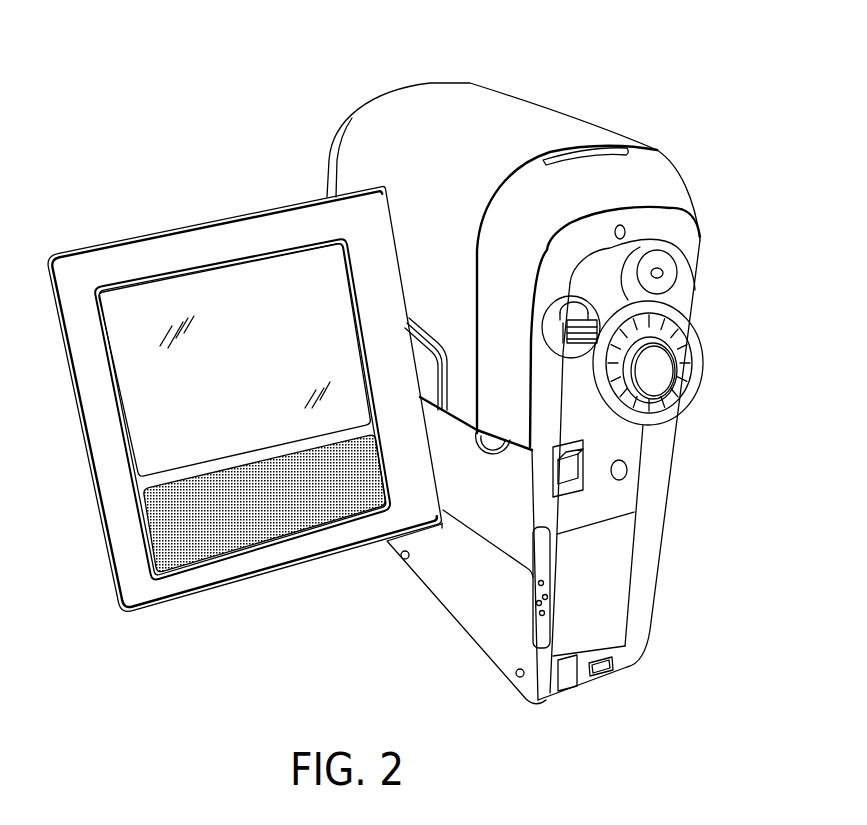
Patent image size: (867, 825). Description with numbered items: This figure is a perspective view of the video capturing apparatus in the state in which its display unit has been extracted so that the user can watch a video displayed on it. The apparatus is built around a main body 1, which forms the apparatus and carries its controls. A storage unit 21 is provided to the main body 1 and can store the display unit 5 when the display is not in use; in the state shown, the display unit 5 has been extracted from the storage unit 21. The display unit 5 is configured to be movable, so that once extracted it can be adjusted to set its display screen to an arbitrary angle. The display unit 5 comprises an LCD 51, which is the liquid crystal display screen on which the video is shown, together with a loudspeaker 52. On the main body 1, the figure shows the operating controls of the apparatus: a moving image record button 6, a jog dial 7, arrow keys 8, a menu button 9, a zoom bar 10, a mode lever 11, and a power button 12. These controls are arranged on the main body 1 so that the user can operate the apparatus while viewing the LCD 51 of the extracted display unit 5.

The main body 1 is at (474, 103).
The display unit 5 is at (222, 232).
The LCD 51 is at (142, 392).
The loudspeaker 52 is at (162, 556).
The storage unit 21 is at (447, 607).
The power button 12 is at (491, 463).
The zoom bar 10 is at (575, 317).
The moving image record button 6 is at (663, 273).
The jog dial 7 is at (678, 330).
The arrow keys 8 is at (657, 372).
The menu button 9 is at (629, 468).
The mode lever 11 is at (583, 473).